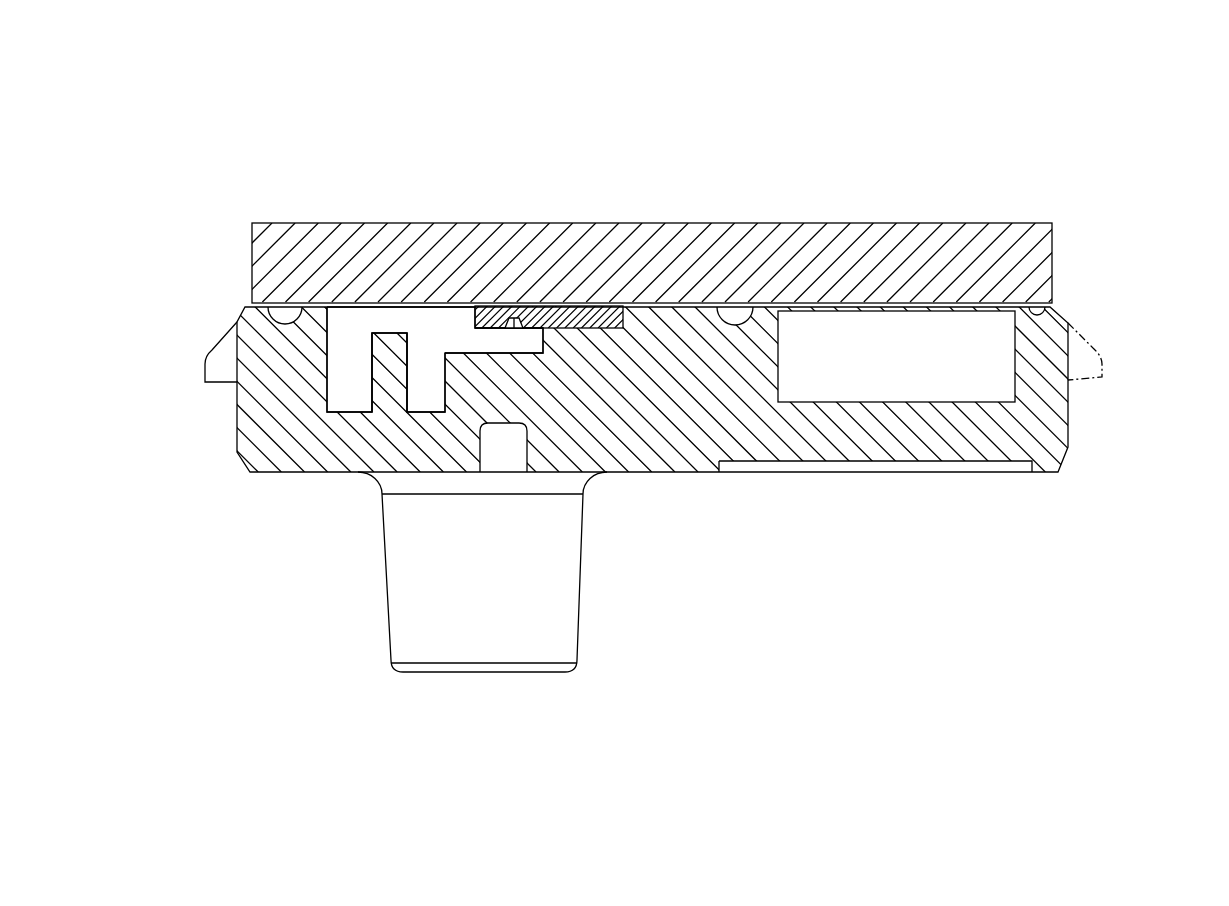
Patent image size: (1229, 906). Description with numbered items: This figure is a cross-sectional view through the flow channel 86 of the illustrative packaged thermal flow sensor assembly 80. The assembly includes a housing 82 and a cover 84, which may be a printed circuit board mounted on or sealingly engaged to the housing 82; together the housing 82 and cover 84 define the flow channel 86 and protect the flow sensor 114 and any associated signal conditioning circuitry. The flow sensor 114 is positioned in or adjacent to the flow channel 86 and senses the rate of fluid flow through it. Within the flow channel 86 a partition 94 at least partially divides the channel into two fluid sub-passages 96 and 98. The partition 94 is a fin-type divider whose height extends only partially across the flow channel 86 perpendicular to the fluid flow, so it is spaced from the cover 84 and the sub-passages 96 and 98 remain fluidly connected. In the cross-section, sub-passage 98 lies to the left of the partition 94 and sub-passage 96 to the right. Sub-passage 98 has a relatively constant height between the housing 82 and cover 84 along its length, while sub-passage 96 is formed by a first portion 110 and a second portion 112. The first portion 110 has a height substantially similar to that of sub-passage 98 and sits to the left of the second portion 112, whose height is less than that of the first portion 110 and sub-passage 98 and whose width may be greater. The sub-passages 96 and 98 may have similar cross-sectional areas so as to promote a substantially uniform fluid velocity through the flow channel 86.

The flow sensor assembly 80 is at (1002, 98).
The housing 82 is at (255, 411).
The cover 84 is at (1040, 235).
The flow channel 86 is at (393, 306).
The partition 94 is at (390, 365).
The sub-passage 96 is at (447, 333).
The sub-passage 98 is at (337, 372).
The first portion 110 is at (427, 393).
The second portion 112 is at (517, 342).
The flow sensor 114 is at (577, 315).